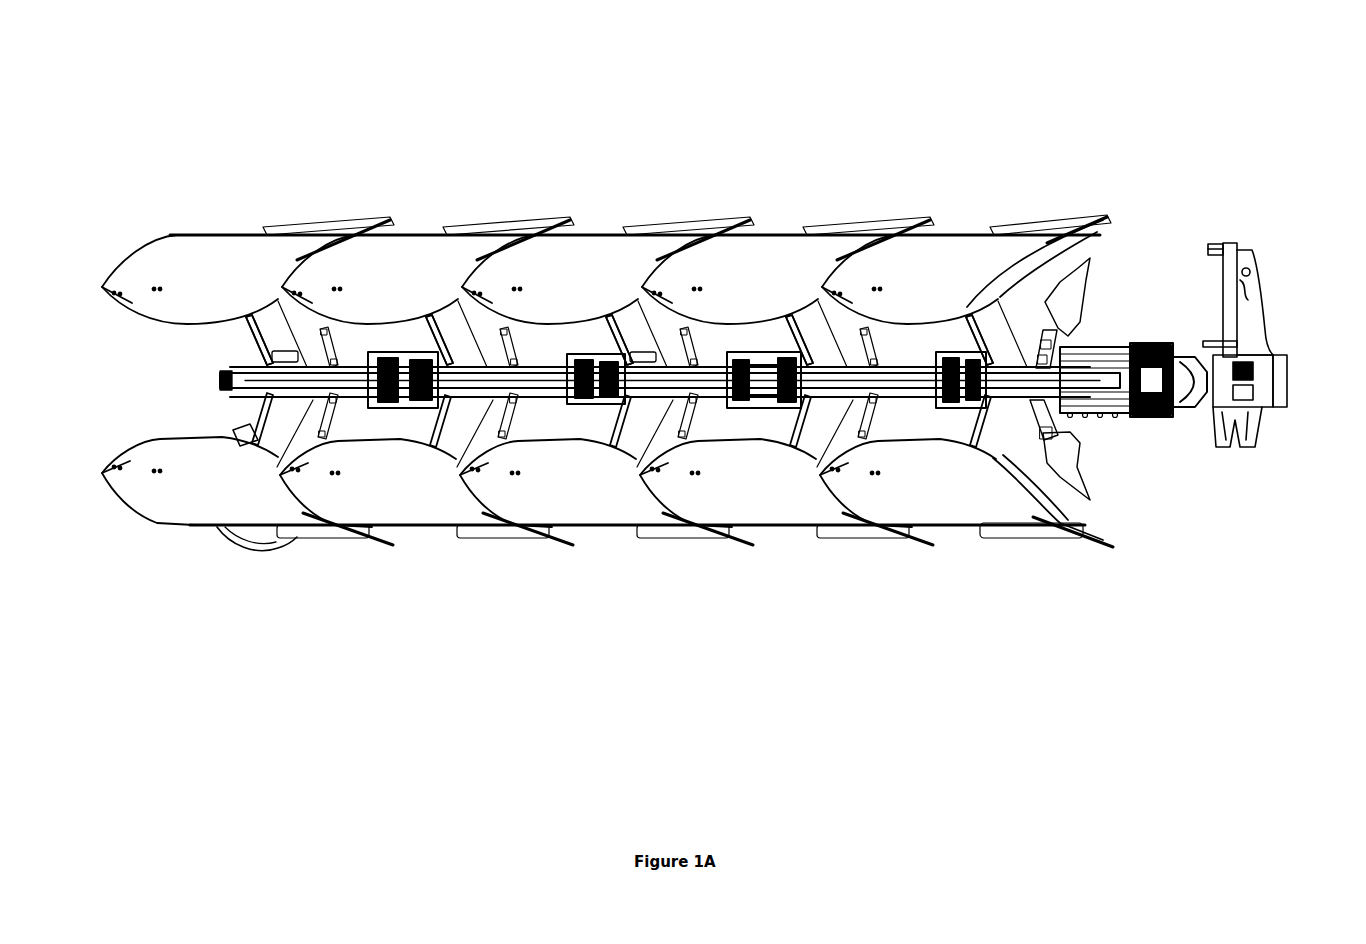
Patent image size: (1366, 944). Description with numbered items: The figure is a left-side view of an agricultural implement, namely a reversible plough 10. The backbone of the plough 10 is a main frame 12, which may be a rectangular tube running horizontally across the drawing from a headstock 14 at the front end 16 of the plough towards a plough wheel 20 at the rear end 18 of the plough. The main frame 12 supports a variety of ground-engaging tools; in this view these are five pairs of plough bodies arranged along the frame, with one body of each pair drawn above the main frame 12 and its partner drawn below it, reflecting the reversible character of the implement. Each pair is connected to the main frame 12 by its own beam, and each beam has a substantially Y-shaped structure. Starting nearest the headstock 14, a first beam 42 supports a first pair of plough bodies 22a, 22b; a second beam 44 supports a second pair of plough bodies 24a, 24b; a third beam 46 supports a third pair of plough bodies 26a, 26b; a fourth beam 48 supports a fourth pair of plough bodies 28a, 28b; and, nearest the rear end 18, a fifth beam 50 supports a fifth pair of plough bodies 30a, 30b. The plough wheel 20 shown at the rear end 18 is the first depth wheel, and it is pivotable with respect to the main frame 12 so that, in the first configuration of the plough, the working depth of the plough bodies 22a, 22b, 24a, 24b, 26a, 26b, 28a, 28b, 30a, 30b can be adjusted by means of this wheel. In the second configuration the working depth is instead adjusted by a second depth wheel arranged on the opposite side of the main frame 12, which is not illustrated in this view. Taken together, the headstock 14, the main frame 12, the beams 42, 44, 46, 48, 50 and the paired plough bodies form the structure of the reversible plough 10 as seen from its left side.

The plough 10 is at (76, 65).
The main frame 12 is at (548, 367).
The headstock 14 is at (1245, 318).
The front end 16 is at (1345, 366).
The rear end 18 is at (56, 366).
The plough wheel 20 is at (235, 438).
The plough body 22a is at (957, 497).
The plough body 22b is at (921, 258).
The plough body 24a is at (767, 500).
The plough body 24b is at (766, 257).
The plough body 26a is at (594, 500).
The plough body 26b is at (628, 257).
The plough body 28a is at (413, 513).
The plough body 28b is at (418, 248).
The plough body 30a is at (190, 508).
The plough body 30b is at (212, 258).
The first beam 42 is at (984, 337).
The second beam 44 is at (800, 328).
The third beam 46 is at (628, 330).
The fourth beam 48 is at (450, 345).
The fifth beam 50 is at (268, 340).